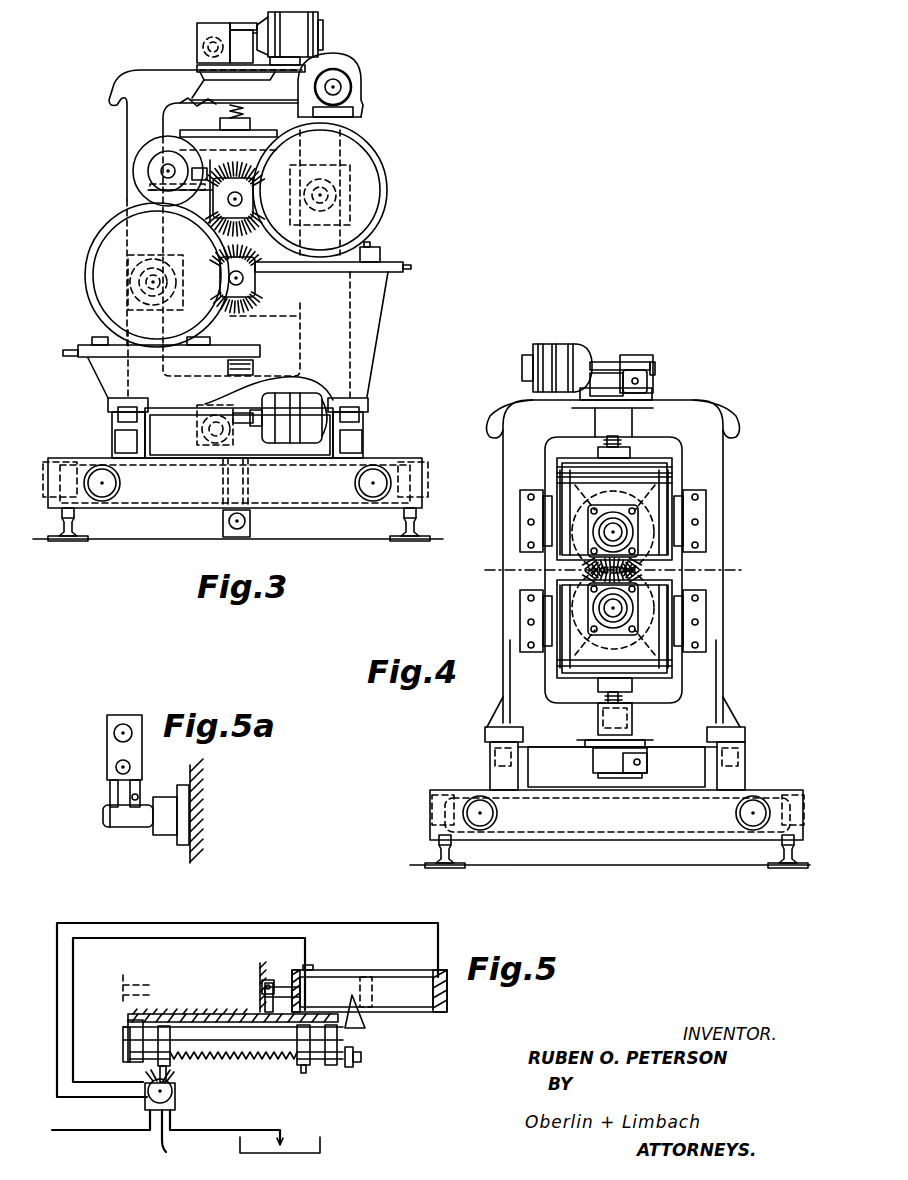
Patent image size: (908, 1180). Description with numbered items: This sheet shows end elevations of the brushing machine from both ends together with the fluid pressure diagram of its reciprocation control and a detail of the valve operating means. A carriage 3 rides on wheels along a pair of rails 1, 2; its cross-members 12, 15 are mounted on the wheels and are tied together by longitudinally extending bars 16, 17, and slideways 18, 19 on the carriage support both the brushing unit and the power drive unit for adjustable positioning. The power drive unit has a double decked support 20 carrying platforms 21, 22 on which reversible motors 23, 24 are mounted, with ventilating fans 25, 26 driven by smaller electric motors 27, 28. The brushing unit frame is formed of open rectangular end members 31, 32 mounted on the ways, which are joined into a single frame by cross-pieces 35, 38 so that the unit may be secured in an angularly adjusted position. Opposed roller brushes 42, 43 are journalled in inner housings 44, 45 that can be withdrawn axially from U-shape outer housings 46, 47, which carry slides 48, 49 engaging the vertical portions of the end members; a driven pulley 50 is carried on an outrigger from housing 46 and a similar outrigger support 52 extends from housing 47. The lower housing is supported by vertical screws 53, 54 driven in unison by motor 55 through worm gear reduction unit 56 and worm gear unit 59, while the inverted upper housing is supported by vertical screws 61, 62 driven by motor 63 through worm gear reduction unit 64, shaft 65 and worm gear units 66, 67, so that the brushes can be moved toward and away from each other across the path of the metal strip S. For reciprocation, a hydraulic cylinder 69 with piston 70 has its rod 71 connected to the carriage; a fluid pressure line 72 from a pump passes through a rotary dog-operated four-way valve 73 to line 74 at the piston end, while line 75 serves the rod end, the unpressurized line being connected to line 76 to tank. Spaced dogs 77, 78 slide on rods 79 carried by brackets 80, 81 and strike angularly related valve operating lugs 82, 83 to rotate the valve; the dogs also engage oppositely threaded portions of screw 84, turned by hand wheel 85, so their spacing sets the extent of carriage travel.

In FIG. 3, the rail 1 is at (414, 524).
In FIG. 4, the rail 1 is at (440, 848).
In FIG. 3, the rail 2 is at (56, 517).
In FIG. 4, the rail 2 is at (785, 850).
In FIG. 3, the carriage 3 is at (395, 460).
In FIG. 4, the carriage 3 is at (770, 790).
In FIG. 5, the carriage 3 is at (214, 1014).
In FIG. 4, the cross-member 12 is at (603, 815).
In FIG. 3, the cross-member 15 is at (325, 490).
In FIG. 3, the longitudinally extending bar 16 is at (373, 489).
In FIG. 4, the longitudinally extending bar 16 is at (482, 815).
In FIG. 3, the longitudinally extending bar 17 is at (102, 489).
In FIG. 4, the longitudinally extending bar 17 is at (750, 815).
In FIG. 3, the slideway 18 is at (365, 424).
In FIG. 4, the slideway 18 is at (490, 760).
In FIG. 3, the slideway 19 is at (112, 421).
In FIG. 4, the slideway 19 is at (742, 755).
In FIG. 3, the double decked support 20 is at (378, 321).
In FIG. 3, the platform 21 is at (102, 340).
In FIG. 3, the platform 22 is at (385, 260).
In FIG. 3, the reversible motor 23 is at (100, 242).
In FIG. 3, the reversible motor 24 is at (365, 156).
In FIG. 3, the fan 25 is at (140, 146).
In FIG. 3, the fan 26 is at (345, 60).
In FIG. 3, the electric motor 27 is at (148, 170).
In FIG. 3, the electric motor 28 is at (353, 84).
In FIG. 4, the open rectangular end member 31 is at (725, 449).
In FIG. 3, the open rectangular end member 32 is at (128, 89).
In FIG. 4, the cross-piece 35 is at (565, 770).
In FIG. 3, the cross-piece 38 is at (168, 447).
In FIG. 3, the roller brush 42 is at (250, 315).
In FIG. 4, the roller brush 42 is at (655, 578).
In FIG. 3, the roller brush 43 is at (240, 173).
In FIG. 4, the roller brush 43 is at (660, 565).
In FIG. 4, the inner housing 44 is at (655, 628).
In FIG. 4, the inner housing 45 is at (650, 515).
In FIG. 4, the U-shape outer housing 46 is at (578, 680).
In FIG. 3, the U-shape outer housing 47 is at (200, 131).
In FIG. 4, the U-shape outer housing 47 is at (655, 458).
In FIG. 4, the slide 48 is at (525, 625).
In FIG. 4, the slide 49 is at (525, 535).
In FIG. 3, the driven pulley 50 is at (217, 261).
In FIG. 3, the outrigger support 52 is at (180, 190).
In FIG. 4, the vertical screw 53 is at (623, 698).
In FIG. 3, the vertical screw 54 is at (255, 366).
In FIG. 3, the motor 55 is at (333, 376).
In FIG. 3, the worm gear reduction unit 56 is at (203, 429).
In FIG. 4, the worm gear unit 59 is at (615, 760).
In FIG. 4, the vertical screw 61 is at (622, 441).
In FIG. 3, the vertical screw 62 is at (190, 98).
In FIG. 4, the motor 63 is at (563, 344).
In FIG. 3, the worm gear reduction unit 64 is at (212, 23).
In FIG. 4, the worm gear reduction unit 64 is at (637, 358).
In FIG. 3, the shaft 65 is at (290, 28).
In FIG. 3, the worm gear unit 66 is at (242, 42).
In FIG. 4, the worm gear unit 67 is at (605, 373).
In FIG. 3, the hydraulic cylinder 69 is at (243, 527).
In FIG. 5, the hydraulic cylinder 69 is at (388, 975).
In FIG. 5, the piston 70 is at (430, 1010).
In FIG. 5, the rod 71 is at (270, 982).
In FIG. 5, the fluid pressure line 72 is at (148, 1108).
In FIG. 5A, the rotary dog-operated four-way valve 73 is at (170, 835).
In FIG. 5, the rotary dog-operated four-way valve 73 is at (166, 1138).
In FIG. 5, the line 74 is at (57, 985).
In FIG. 5, the line 75 is at (115, 938).
In FIG. 5, the line to tank 76 is at (172, 1116).
In FIG. 5A, the dog 77 is at (110, 782).
In FIG. 5, the dog 77 is at (175, 1076).
In FIG. 5A, the dog 78 is at (141, 788).
In FIG. 5, the dog 78 is at (303, 1066).
In FIG. 5, the rod 79 is at (278, 1040).
In FIG. 5A, the bracket 80 is at (107, 730).
In FIG. 5, the bracket 80 is at (128, 1027).
In FIG. 5, the bracket 81 is at (333, 1065).
In FIG. 5, the valve operating lug 82 is at (158, 1071).
In FIG. 5A, the valve operating lug 83 is at (130, 828).
In FIG. 5, the valve operating lug 83 is at (174, 1085).
In FIG. 5, the screw 84 is at (235, 1060).
In FIG. 5, the hand wheel 85 is at (355, 1064).
In FIG. 4, the metal strip S is at (745, 570).